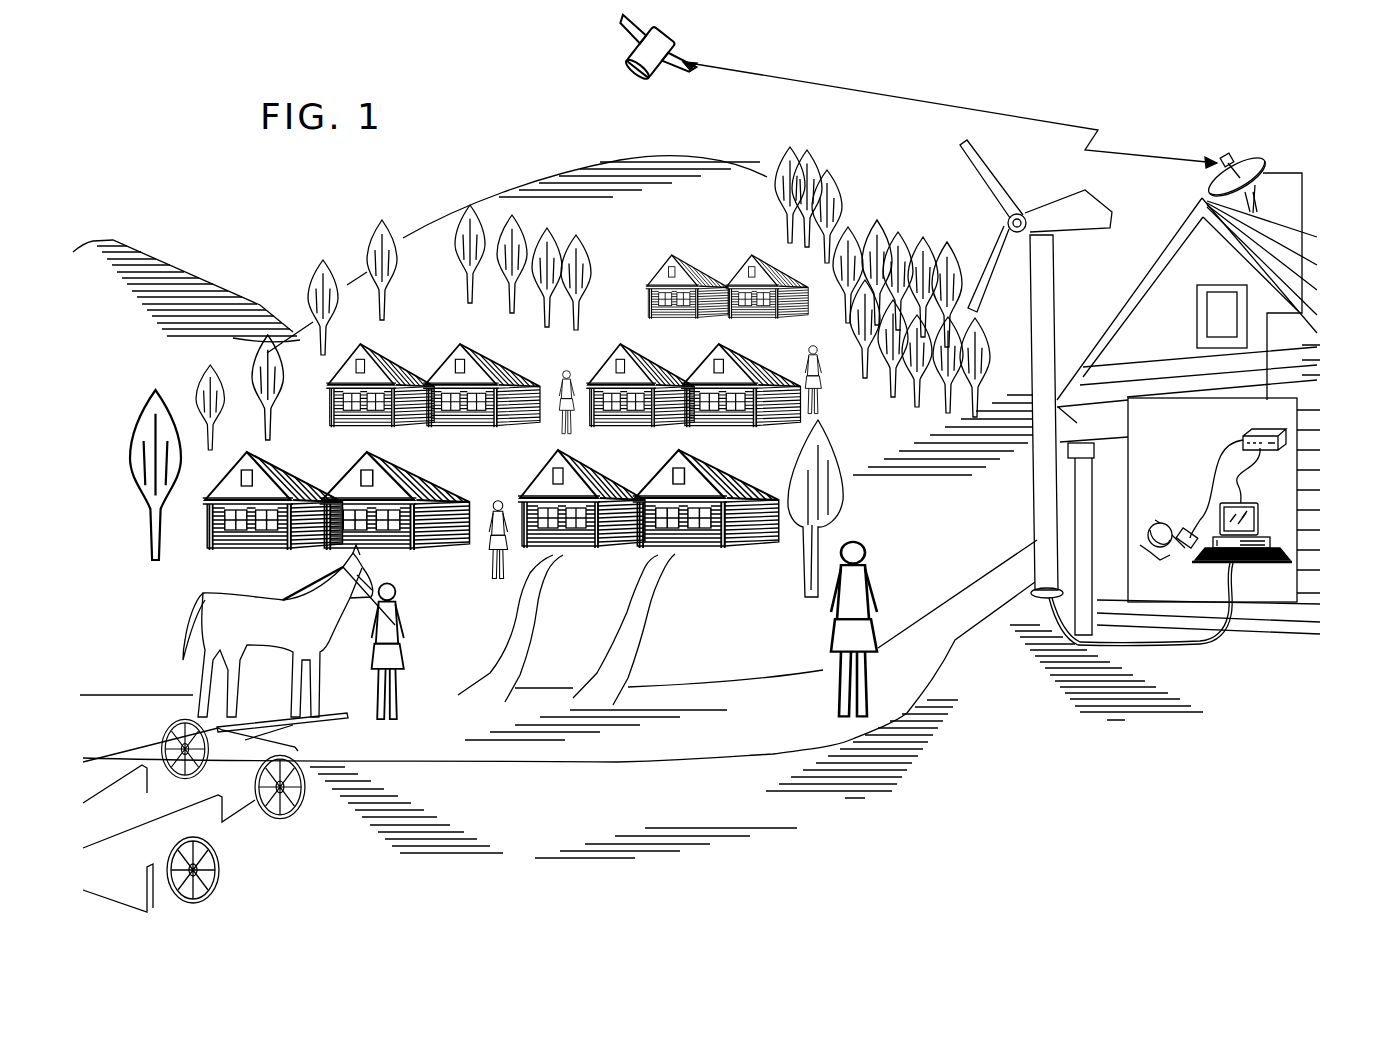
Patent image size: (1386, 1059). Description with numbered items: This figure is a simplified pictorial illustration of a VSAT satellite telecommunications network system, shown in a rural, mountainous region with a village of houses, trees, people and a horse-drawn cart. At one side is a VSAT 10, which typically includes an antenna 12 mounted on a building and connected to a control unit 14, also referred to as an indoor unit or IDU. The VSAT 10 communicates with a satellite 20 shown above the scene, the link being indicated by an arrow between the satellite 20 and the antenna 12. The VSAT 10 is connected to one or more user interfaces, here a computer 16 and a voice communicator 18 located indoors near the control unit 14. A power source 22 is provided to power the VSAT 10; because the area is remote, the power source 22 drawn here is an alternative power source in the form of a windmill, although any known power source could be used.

The VSAT 10 is at (1320, 245).
The antenna 12 is at (1243, 160).
The control unit 14 is at (1243, 430).
The computer 16 is at (1278, 562).
The voice communicator 18 is at (1172, 535).
The satellite 20 is at (632, 35).
The power source 22 is at (1003, 188).